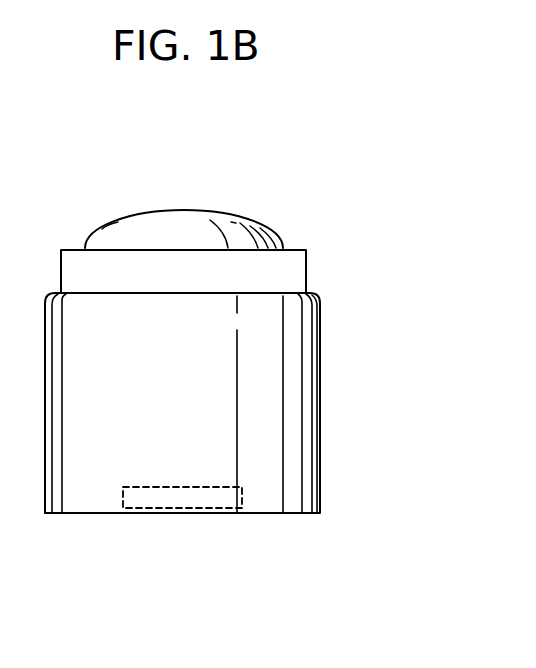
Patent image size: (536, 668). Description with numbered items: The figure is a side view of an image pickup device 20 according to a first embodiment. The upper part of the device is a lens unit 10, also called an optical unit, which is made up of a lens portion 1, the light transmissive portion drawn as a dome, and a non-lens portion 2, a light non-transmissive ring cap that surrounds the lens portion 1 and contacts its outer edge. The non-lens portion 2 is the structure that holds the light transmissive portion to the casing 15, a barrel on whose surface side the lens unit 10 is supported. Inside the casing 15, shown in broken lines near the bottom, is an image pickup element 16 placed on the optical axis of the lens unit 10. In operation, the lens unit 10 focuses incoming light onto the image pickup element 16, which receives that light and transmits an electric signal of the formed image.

The lens portion 1 is at (257, 222).
The non-lens portion 2 is at (221, 271).
The lens unit 10 is at (251, 250).
The casing 15 is at (320, 453).
The image pickup element 16 is at (207, 497).
The image pickup device 20 is at (262, 440).